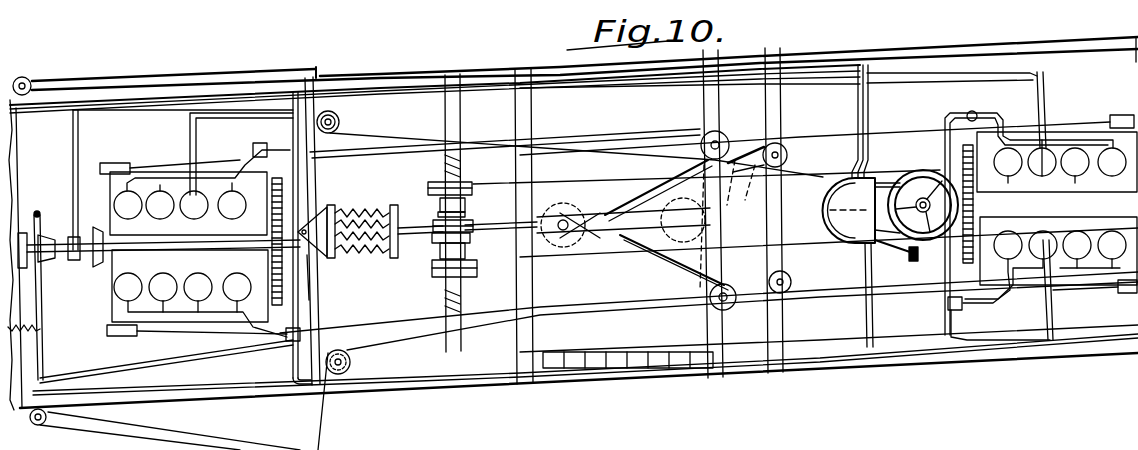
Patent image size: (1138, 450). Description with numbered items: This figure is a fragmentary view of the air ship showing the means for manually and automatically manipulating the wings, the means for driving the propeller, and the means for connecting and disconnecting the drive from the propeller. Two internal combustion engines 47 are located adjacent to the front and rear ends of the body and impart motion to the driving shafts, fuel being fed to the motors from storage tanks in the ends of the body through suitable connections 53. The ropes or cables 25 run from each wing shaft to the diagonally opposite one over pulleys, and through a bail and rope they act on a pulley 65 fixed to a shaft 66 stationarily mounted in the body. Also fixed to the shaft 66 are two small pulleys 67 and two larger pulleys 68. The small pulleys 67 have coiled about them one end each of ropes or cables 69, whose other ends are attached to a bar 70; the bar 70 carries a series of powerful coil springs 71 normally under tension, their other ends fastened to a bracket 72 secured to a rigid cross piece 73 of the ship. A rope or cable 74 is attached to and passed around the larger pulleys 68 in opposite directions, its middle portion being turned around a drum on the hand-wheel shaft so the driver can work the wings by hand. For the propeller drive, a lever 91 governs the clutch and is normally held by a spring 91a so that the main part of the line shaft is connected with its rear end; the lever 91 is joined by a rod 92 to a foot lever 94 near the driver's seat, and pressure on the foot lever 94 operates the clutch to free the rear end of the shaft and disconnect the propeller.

The ropes or cables 25 is at (823, 141).
The internal combustion engines 47 is at (1057, 208).
The connections 53 is at (240, 384).
The pulley 65 is at (470, 243).
The shaft 66 is at (466, 178).
The small pulleys 67 is at (466, 213).
The larger pulleys 68 is at (430, 183).
The ropes or cables 69 is at (410, 210).
The bar 70 is at (385, 204).
The coil springs 71 is at (362, 243).
The bracket 72 is at (323, 277).
The cross piece 73 is at (305, 168).
The rope or cable 74 is at (606, 255).
The lever 91 is at (42, 292).
The spring 91a is at (42, 330).
The rod 92 is at (148, 363).
The foot lever 94 is at (922, 270).